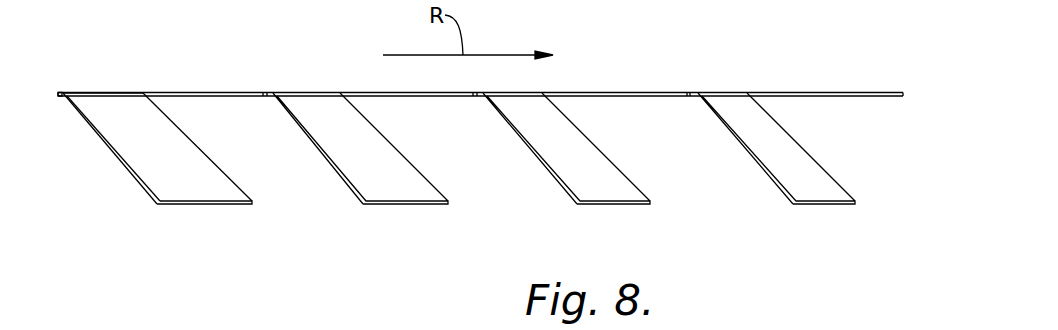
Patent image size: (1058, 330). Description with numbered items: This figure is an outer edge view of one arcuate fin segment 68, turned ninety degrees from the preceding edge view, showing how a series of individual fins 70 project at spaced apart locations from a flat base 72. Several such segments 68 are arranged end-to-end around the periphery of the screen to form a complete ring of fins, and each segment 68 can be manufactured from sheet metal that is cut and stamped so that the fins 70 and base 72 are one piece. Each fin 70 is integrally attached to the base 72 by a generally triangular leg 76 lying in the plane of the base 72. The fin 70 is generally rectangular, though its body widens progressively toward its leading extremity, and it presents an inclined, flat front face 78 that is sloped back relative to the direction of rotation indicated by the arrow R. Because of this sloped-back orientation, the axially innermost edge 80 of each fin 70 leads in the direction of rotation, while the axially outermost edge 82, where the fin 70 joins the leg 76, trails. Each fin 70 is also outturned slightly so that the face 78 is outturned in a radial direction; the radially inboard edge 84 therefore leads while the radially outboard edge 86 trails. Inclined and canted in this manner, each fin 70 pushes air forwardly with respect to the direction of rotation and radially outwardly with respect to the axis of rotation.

The arcuate fin segment 68 is at (633, 78).
The fin 70 is at (117, 172).
The flat base 72 is at (220, 95).
The generally triangular leg 76 is at (62, 95).
The inclined flat front face 78 is at (165, 180).
The axially innermost edge 80 is at (218, 205).
The axially outermost edge 82 is at (122, 92).
The radially inboard edge 84 is at (220, 167).
The radially outboard edge 86 is at (112, 153).